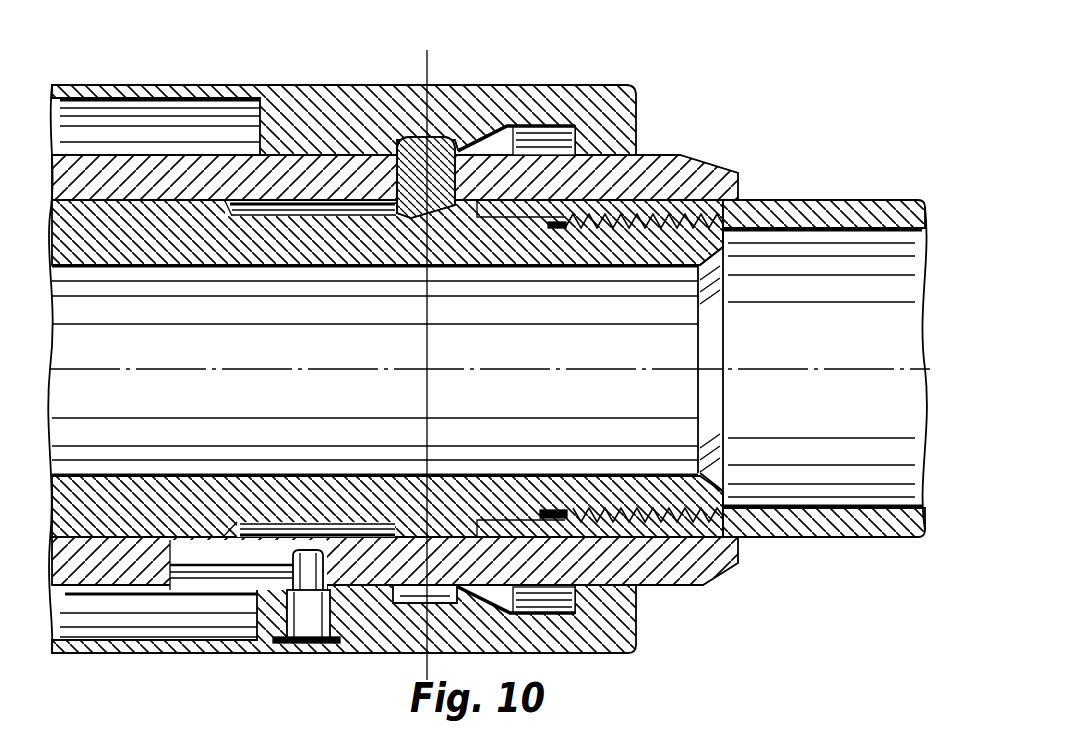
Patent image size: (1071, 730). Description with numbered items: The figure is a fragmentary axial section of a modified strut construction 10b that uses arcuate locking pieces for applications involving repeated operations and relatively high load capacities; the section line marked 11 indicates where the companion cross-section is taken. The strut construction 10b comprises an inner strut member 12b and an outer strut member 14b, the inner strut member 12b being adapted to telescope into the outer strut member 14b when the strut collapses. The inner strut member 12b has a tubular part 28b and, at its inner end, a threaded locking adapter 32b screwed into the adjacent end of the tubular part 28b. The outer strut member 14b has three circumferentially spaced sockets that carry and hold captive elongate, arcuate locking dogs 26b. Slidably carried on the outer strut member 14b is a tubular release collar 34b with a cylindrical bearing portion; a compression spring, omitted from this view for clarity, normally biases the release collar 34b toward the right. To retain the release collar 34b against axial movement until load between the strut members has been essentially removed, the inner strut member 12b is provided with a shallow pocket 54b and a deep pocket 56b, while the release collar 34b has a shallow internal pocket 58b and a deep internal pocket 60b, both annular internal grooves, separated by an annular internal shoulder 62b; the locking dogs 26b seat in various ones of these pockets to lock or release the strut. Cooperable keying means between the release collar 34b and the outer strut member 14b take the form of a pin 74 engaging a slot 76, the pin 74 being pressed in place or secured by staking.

The strut construction 10b is at (762, 130).
The inner strut member 12b is at (812, 378).
The outer strut member 14b is at (667, 573).
The tubular part 28b is at (853, 522).
The release collar 34b is at (632, 103).
The deep internal pocket 60b is at (558, 140).
The annular internal shoulder 62b is at (478, 150).
The arcuate locking dog 26b is at (420, 207).
The threaded locking adapter 32b is at (232, 497).
The deep pocket 56b is at (350, 523).
The shallow pocket 54b is at (423, 538).
The shallow internal pocket 58b is at (450, 590).
The pin 74 is at (300, 627).
The slot 76 is at (240, 568).
The section line 11- 11 is at (420, 67).